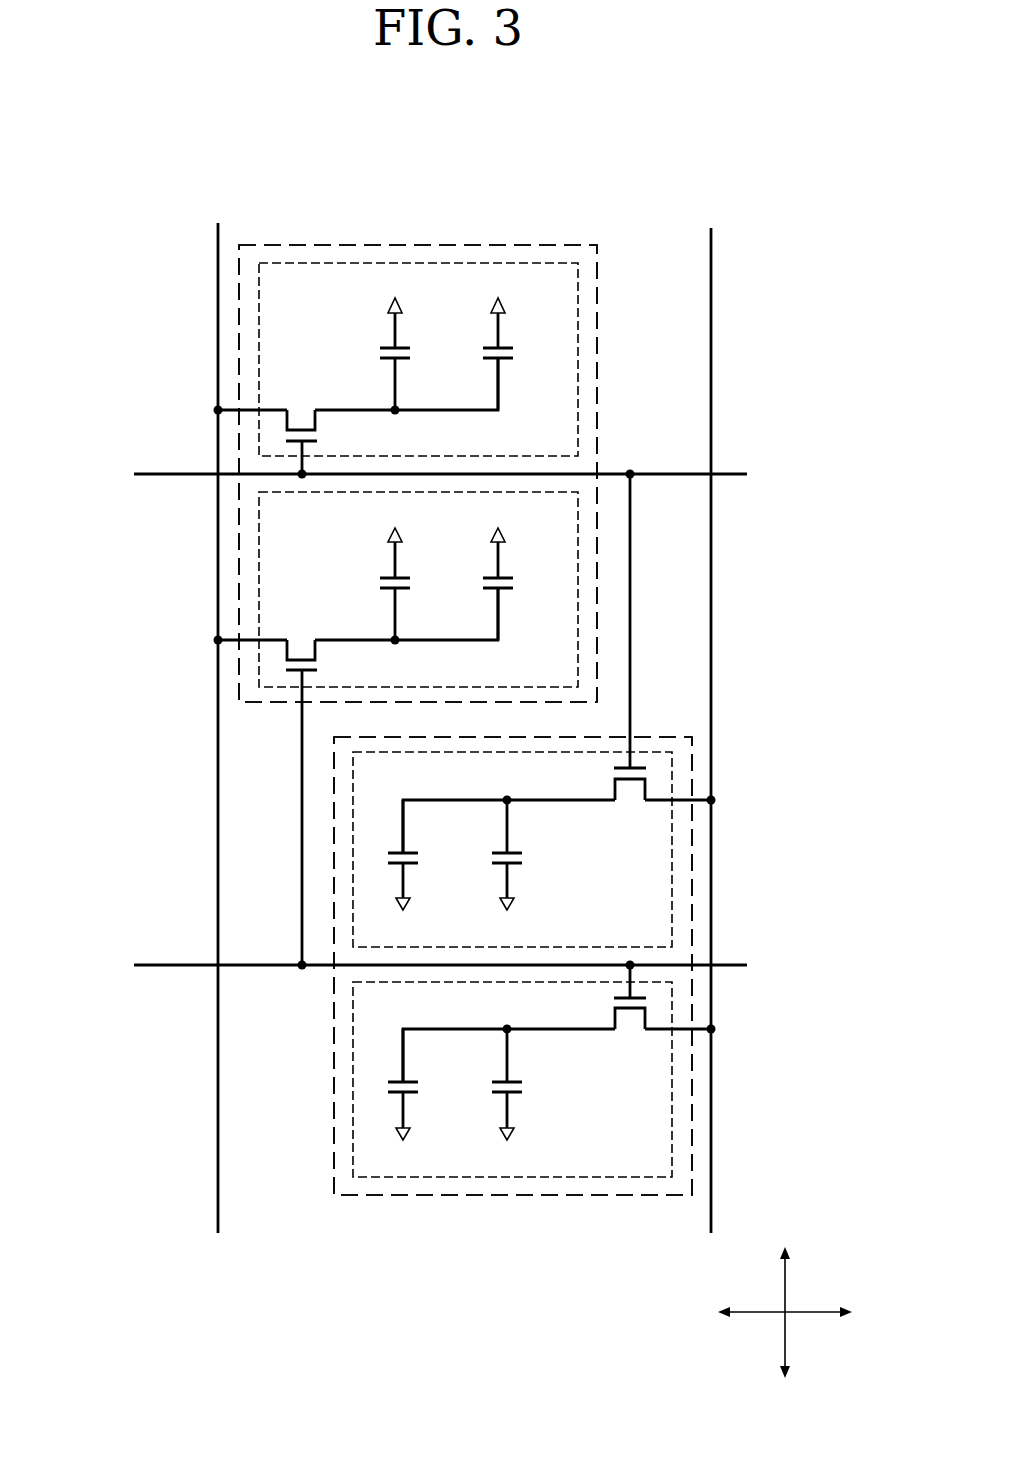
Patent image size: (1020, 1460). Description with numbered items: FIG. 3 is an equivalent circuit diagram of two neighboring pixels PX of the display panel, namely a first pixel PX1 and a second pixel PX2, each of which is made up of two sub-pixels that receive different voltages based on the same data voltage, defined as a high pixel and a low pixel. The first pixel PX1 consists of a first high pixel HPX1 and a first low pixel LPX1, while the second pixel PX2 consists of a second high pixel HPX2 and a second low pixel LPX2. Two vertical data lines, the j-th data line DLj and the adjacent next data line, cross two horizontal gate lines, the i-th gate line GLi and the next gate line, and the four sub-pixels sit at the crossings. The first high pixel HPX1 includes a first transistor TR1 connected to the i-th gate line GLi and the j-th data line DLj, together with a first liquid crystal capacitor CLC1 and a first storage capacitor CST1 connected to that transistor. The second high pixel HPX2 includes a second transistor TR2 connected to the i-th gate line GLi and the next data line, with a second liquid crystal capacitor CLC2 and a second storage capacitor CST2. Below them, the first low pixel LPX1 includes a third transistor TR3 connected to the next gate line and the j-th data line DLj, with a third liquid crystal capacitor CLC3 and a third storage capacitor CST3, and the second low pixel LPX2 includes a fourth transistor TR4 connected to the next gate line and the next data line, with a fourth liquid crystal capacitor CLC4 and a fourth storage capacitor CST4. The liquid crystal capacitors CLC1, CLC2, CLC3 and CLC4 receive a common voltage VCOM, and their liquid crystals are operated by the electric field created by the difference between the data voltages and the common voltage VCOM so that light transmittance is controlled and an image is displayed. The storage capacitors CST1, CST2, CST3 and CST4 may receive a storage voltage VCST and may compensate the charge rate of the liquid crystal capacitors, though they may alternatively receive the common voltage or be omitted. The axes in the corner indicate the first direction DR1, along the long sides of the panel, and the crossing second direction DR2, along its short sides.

The pixel PX is at (644, 161).
The first pixel PX1 is at (239, 288).
The second pixel PX2 is at (692, 1062).
The first high pixel HPX1 is at (259, 338).
The first low pixel LPX1 is at (259, 568).
The second high pixel HPX2 is at (672, 883).
The second low pixel LPX2 is at (672, 1101).
The first transistor TR1 is at (299, 430).
The second transistor TR2 is at (631, 650).
The third transistor TR3 is at (299, 789).
The fourth transistor TR4 is at (632, 1010).
The first liquid crystal capacitor CLC1 is at (421, 361).
The second liquid crystal capacitor CLC2 is at (534, 849).
The third liquid crystal capacitor CLC3 is at (421, 591).
The fourth liquid crystal capacitor CLC4 is at (534, 1078).
The first storage capacitor CST1 is at (525, 361).
The second storage capacitor CST2 is at (430, 849).
The third storage capacitor CST3 is at (525, 591).
The fourth storage capacitor CST4 is at (430, 1078).
The j-th data line DLj is at (218, 711).
The i-th gate line GLi is at (417, 474).
The common voltage VCOM is at (451, 720).
The storage voltage VCST is at (451, 720).
The first direction DR1 is at (805, 1312).
The second direction DR2 is at (786, 1297).